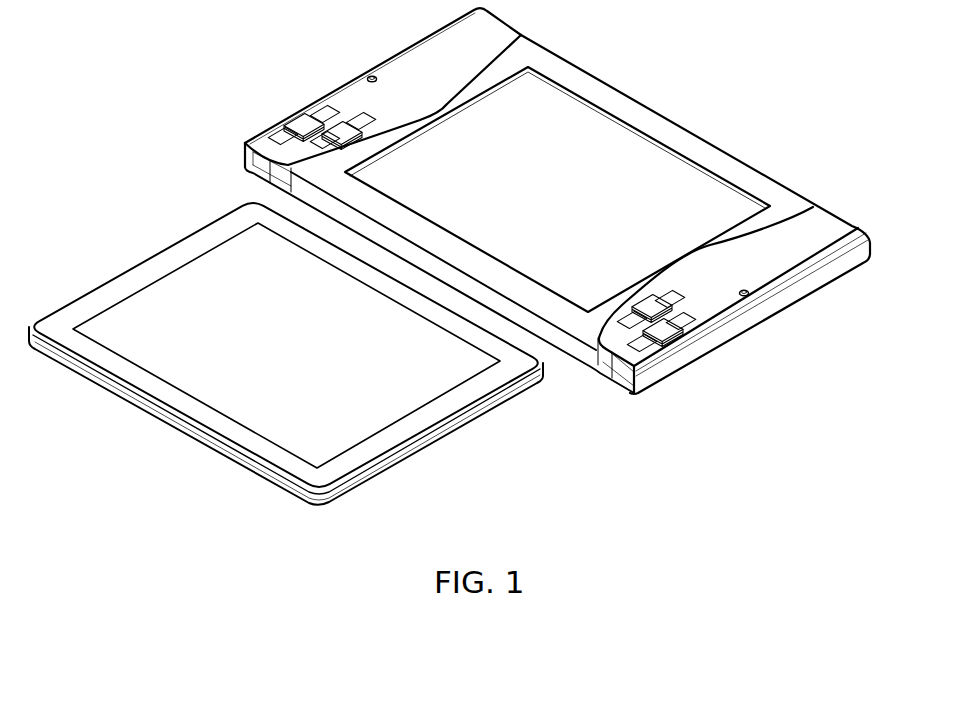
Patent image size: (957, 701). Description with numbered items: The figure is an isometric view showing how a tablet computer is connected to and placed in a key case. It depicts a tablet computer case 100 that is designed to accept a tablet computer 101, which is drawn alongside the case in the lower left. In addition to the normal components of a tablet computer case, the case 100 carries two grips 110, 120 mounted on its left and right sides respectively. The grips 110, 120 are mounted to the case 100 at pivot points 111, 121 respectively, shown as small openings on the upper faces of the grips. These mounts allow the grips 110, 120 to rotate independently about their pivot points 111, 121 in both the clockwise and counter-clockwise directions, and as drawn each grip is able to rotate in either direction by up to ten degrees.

The tablet computer case 100 is at (667, 115).
The tablet computer 101 is at (157, 423).
The grip 110 is at (804, 288).
The pivot point 111 is at (749, 297).
The grip 120 is at (398, 50).
The pivot point 121 is at (368, 77).